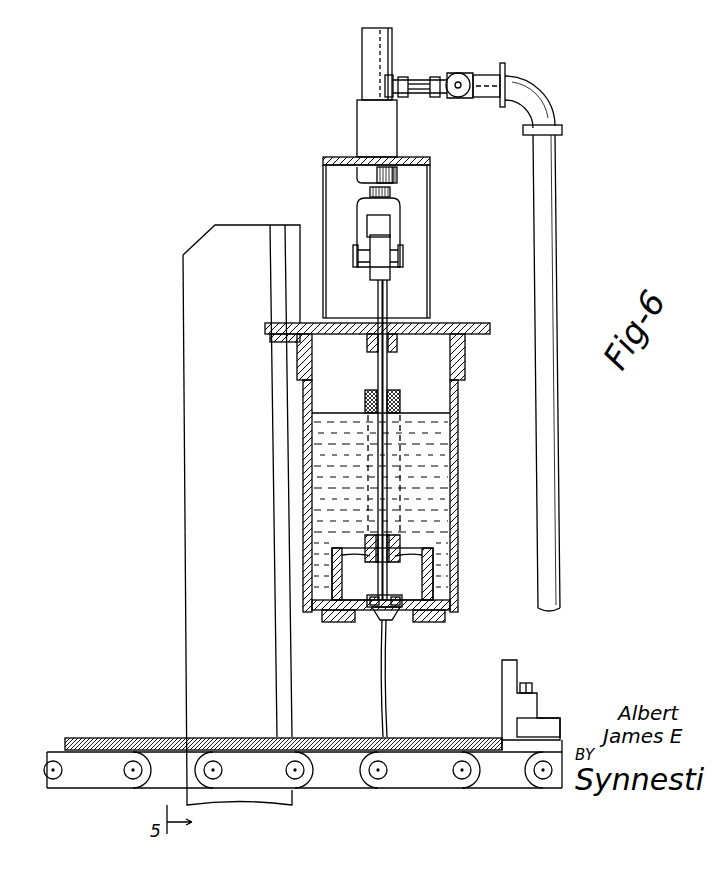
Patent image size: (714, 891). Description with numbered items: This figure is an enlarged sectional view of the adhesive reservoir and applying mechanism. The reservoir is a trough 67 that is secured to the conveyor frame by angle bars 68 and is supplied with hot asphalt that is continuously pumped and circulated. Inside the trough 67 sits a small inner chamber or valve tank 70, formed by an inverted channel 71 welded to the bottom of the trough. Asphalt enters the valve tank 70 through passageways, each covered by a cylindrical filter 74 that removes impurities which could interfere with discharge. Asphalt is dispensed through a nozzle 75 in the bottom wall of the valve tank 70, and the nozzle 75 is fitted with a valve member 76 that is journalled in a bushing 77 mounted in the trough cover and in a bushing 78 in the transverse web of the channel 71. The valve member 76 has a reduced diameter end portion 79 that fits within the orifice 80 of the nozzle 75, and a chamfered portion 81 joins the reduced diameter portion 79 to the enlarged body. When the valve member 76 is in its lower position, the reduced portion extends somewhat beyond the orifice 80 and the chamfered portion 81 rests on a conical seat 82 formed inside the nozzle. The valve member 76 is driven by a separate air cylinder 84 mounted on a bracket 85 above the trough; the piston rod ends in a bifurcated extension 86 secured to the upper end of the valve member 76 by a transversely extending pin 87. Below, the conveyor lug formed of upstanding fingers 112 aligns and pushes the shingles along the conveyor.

The trough 67 is at (470, 388).
The angle bars 68 is at (210, 236).
The valve tank 70 is at (413, 573).
The inverted channel 71 is at (430, 543).
The cylindrical filter 74 is at (365, 402).
The nozzle 75 is at (391, 628).
The valve member 76 is at (385, 308).
The bushing 77 is at (397, 340).
The bushing 78 is at (397, 542).
The reduced diameter end portion 79 is at (370, 617).
The orifice 80 is at (383, 622).
The chamfered portion 81 is at (398, 590).
The conical seat 82 is at (399, 615).
The air cylinder 84 is at (352, 110).
The bracket 85 is at (429, 206).
The bifurcated extension 86 is at (362, 217).
The transversely extending pin 87 is at (405, 253).
The upstanding fingers 112 is at (508, 705).